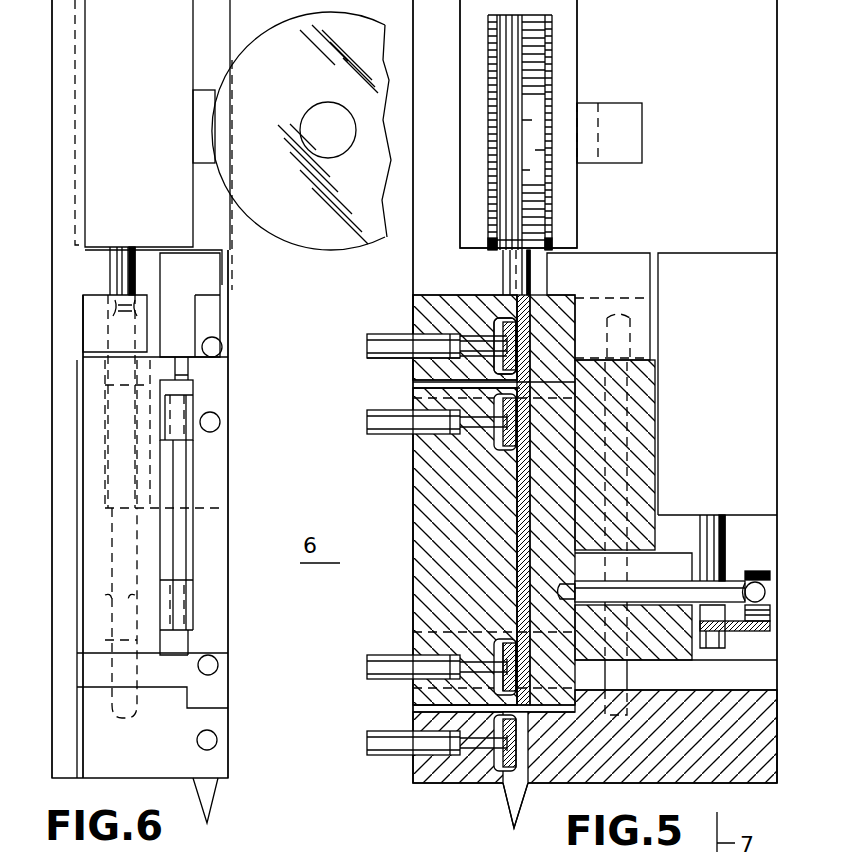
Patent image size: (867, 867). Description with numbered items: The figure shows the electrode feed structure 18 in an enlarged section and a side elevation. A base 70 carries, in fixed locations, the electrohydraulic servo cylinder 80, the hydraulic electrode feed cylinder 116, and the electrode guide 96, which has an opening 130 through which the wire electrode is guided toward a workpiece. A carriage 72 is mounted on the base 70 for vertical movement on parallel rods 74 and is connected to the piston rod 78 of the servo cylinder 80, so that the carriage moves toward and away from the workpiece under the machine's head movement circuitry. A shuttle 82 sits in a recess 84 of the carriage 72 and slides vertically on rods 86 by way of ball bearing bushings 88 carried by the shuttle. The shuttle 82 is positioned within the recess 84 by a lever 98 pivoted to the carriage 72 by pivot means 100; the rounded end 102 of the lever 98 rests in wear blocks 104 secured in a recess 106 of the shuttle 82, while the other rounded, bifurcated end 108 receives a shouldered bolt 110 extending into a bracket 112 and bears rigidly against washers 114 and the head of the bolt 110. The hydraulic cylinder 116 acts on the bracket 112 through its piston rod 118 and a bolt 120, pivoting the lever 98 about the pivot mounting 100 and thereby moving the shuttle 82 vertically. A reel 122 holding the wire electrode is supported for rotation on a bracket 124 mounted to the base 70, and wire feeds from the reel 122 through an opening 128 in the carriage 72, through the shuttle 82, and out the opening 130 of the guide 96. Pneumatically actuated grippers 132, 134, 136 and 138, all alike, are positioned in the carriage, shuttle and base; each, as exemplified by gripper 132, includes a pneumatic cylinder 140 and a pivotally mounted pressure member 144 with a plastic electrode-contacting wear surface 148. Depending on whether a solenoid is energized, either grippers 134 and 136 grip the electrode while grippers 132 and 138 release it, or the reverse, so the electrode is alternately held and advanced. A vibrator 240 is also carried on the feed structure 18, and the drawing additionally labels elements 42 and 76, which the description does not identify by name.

In FIG. 6, the electrode feed structure 18 is at (52, 29).
In FIG. 5, the electrode feed structure 18 is at (777, 735).
In FIG. 5, the bolt shank 42 is at (470, 340).
In FIG. 6, the base 70 is at (55, 354).
In FIG. 5, the base 70 is at (778, 92).
In FIG. 6, the carriage 72 is at (81, 473).
In FIG. 5, the carriage 72 is at (413, 318).
In FIG. 6, the parallel rods 74 is at (137, 712).
In FIG. 5, the parallel rods 74 is at (628, 690).
In FIG. 6, the support block 76 is at (110, 598).
In FIG. 5, the support block 76 is at (655, 381).
In FIG. 6, the piston rod 78 is at (137, 273).
In FIG. 5, the piston rod 78 is at (533, 274).
In FIG. 6, the electrohydraulic servo cylinder 80 is at (88, 93).
In FIG. 5, the electrohydraulic servo cylinder 80 is at (577, 92).
In FIG. 6, the shuttle 82 is at (228, 548).
In FIG. 5, the shuttle 82 is at (413, 481).
In FIG. 6, the recess 84 is at (165, 481).
In FIG. 5, the recess 84 is at (413, 708).
In FIG. 6, the rods 86 is at (188, 579).
In FIG. 6, the ball bearing bushings 88 is at (192, 400).
In FIG. 6, the electrode guide 96 is at (217, 803).
In FIG. 5, the electrode guide 96 is at (503, 788).
In FIG. 5, the lever 98 is at (727, 559).
In FIG. 5, the pivot means 100 is at (605, 578).
In FIG. 5, the rounded end 102 is at (570, 590).
In FIG. 5, the wear blocks 104 is at (560, 571).
In FIG. 5, the recess 106 is at (512, 632).
In FIG. 5, the other end 108 is at (767, 595).
In FIG. 5, the shouldered bolt 110 is at (771, 573).
In FIG. 5, the bracket 112 is at (771, 631).
In FIG. 5, the washers 114 is at (771, 616).
In FIG. 6, the hydraulic cylinder 116 is at (205, 250).
In FIG. 5, the hydraulic cylinder 116 is at (778, 396).
In FIG. 5, the piston rod 118 is at (728, 529).
In FIG. 5, the bolt 120 is at (715, 648).
In FIG. 6, the reel 122 is at (345, 20).
In FIG. 5, the reel 122 is at (555, 53).
In FIG. 6, the bracket 124 is at (198, 90).
In FIG. 5, the bracket 124 is at (622, 164).
In FIG. 5, the opening 128 is at (503, 292).
In FIG. 5, the opening 130 is at (525, 790).
In FIG. 6, the gripper 132 is at (228, 357).
In FIG. 5, the gripper 132 is at (385, 362).
In FIG. 6, the gripper 134 is at (221, 426).
In FIG. 5, the gripper 134 is at (385, 438).
In FIG. 6, the gripper 136 is at (219, 668).
In FIG. 5, the gripper 136 is at (370, 660).
In FIG. 6, the gripper 138 is at (218, 738).
In FIG. 5, the gripper 138 is at (370, 733).
In FIG. 5, the pneumatic cylinder 140 is at (370, 340).
In FIG. 5, the pressure member 144 is at (505, 326).
In FIG. 5, the wear surface 148 is at (512, 340).
In FIG. 6, the vibrator 240 is at (262, 284).
In FIG. 5, the vibrator 240 is at (600, 253).